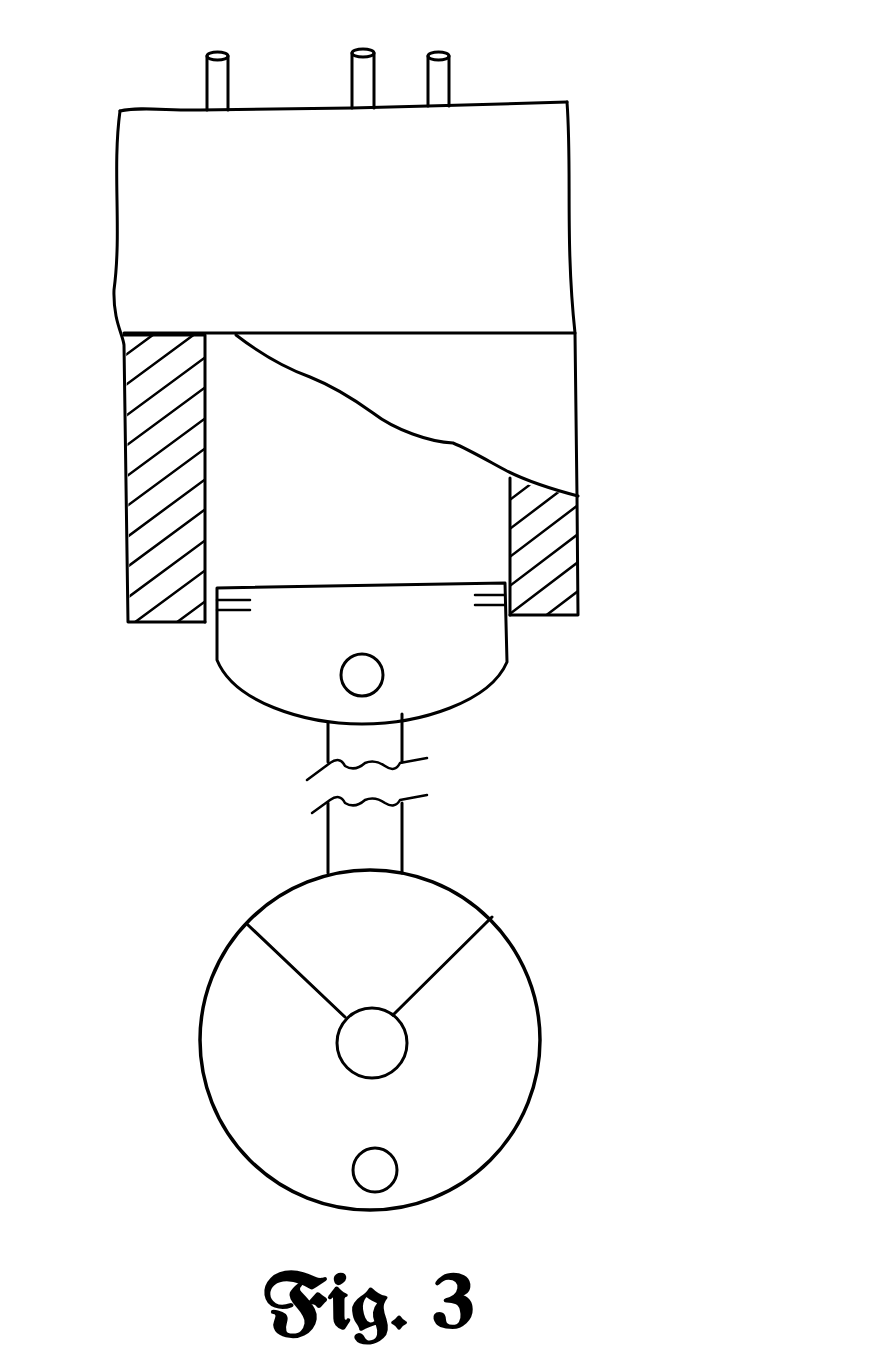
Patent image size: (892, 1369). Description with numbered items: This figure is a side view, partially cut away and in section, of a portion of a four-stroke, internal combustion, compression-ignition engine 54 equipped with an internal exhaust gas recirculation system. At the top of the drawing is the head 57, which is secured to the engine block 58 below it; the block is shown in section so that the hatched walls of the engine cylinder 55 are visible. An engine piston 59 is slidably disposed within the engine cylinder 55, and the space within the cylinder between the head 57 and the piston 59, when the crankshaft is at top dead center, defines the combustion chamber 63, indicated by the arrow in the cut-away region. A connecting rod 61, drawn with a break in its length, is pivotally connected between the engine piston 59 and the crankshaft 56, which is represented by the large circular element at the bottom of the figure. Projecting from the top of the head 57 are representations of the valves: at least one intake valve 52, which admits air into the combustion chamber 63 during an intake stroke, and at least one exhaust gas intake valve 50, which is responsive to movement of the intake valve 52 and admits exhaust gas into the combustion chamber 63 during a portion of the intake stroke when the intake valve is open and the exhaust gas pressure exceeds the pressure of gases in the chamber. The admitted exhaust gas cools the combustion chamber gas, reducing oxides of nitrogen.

The exhaust gas intake valve 50 is at (228, 82).
The intake valve 52 is at (450, 62).
The engine 54 is at (645, 171).
The engine cylinder 55 is at (513, 543).
The crankshaft 56 is at (492, 917).
The head 57 is at (573, 280).
The engine block 58 is at (573, 372).
The engine piston 59 is at (505, 633).
The connecting rod 61 is at (405, 835).
The combustion chamber 63 is at (217, 350).